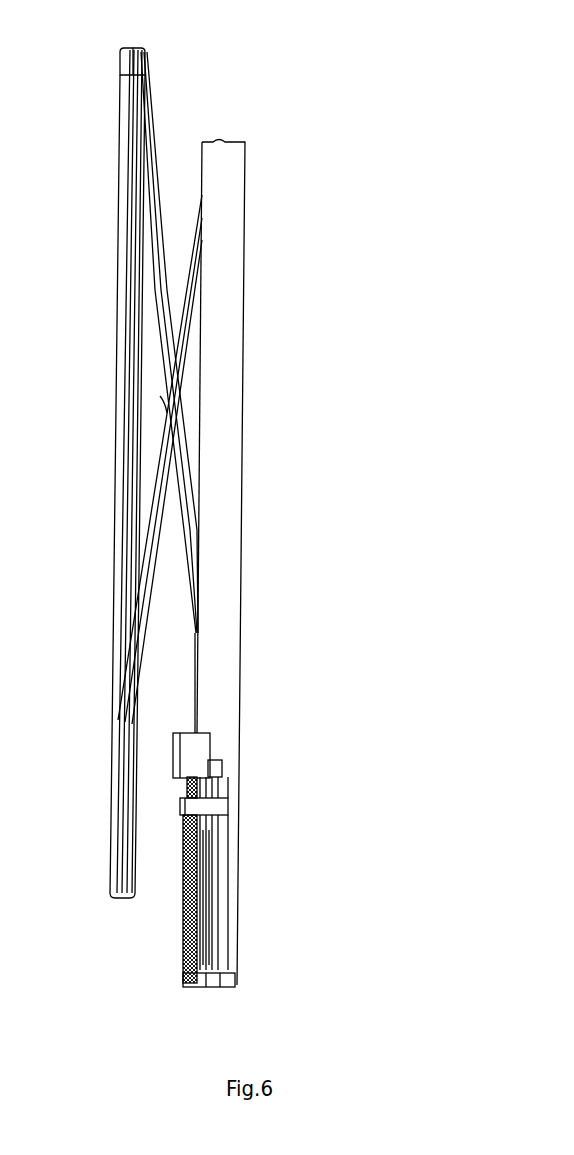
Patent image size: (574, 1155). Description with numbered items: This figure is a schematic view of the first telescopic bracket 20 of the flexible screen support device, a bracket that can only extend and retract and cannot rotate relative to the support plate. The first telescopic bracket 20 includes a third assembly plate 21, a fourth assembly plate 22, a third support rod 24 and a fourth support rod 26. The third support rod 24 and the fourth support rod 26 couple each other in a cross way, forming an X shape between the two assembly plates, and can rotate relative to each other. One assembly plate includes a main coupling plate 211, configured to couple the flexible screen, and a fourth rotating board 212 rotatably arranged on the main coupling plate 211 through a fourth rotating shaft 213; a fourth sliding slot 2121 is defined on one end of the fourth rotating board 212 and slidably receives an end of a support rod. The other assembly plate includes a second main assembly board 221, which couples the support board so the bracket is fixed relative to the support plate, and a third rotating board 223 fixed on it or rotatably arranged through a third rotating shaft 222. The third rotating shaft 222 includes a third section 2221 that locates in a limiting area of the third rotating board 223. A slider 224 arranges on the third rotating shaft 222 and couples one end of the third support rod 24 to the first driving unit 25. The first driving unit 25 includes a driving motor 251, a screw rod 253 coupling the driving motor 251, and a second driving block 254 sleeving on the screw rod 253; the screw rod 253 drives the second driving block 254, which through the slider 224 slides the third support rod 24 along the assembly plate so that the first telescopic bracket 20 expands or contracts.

The first telescopic bracket 20 is at (331, 83).
The third assembly plate 21 is at (123, 325).
The main coupling plate 211 is at (126, 70).
The fourth rotating board 212 is at (143, 70).
The fourth rotating shaft 213 is at (133, 200).
The fourth sliding slot 2121 is at (122, 795).
The fourth assembly plate 22 is at (243, 393).
The second main assembly board 221 is at (230, 210).
The third rotating shaft 222 is at (215, 872).
The third section 2221 is at (212, 947).
The third rotating board 223 is at (197, 935).
The slider 224 is at (228, 798).
The third support rod 24 is at (187, 493).
The first driving unit 25 is at (180, 873).
The driving motor 251 is at (198, 747).
The screw rod 253 is at (197, 920).
The second driving block 254 is at (220, 805).
The fourth support rod 26 is at (163, 455).